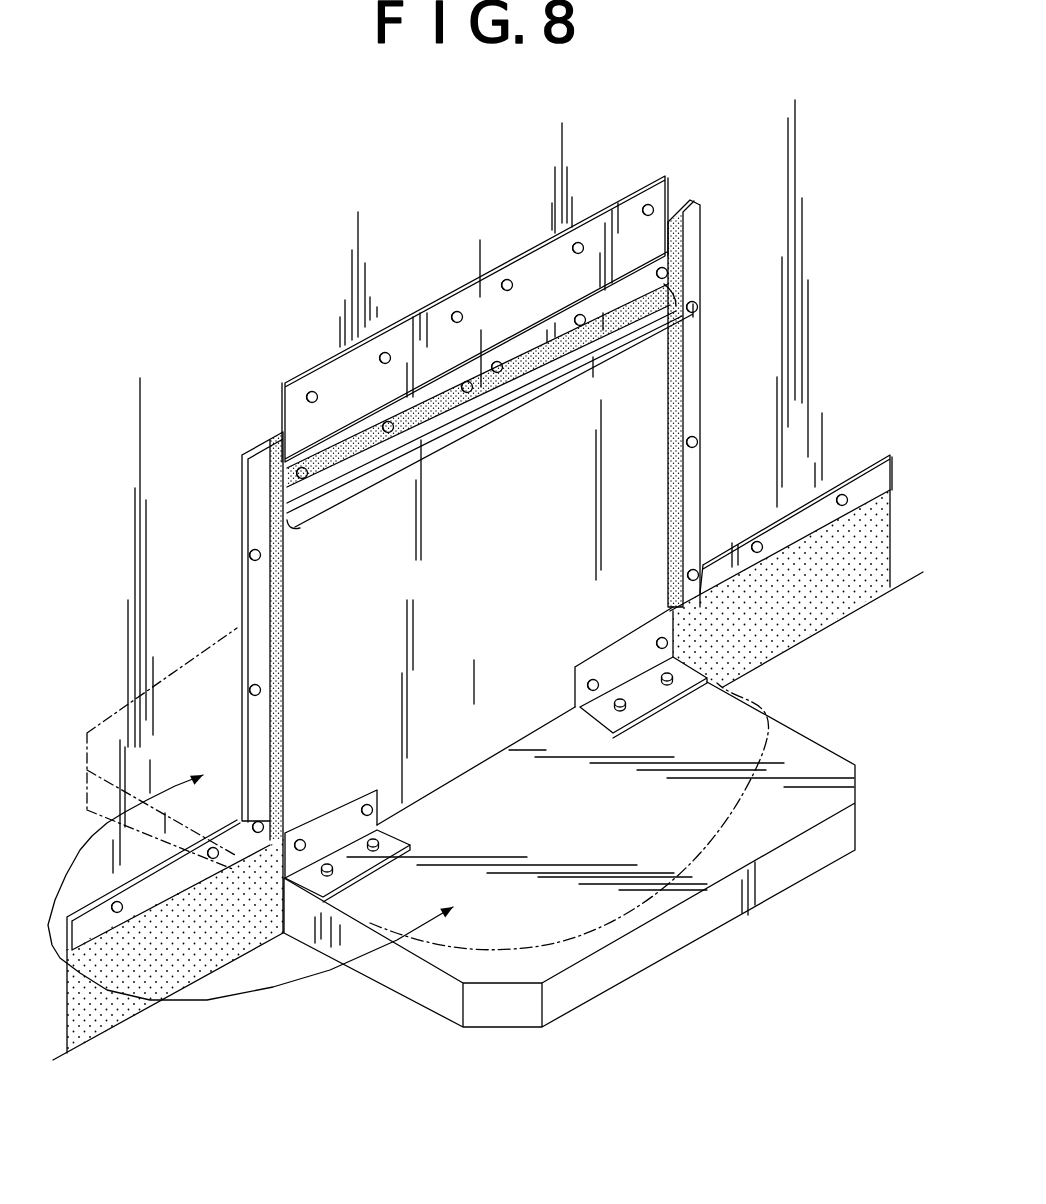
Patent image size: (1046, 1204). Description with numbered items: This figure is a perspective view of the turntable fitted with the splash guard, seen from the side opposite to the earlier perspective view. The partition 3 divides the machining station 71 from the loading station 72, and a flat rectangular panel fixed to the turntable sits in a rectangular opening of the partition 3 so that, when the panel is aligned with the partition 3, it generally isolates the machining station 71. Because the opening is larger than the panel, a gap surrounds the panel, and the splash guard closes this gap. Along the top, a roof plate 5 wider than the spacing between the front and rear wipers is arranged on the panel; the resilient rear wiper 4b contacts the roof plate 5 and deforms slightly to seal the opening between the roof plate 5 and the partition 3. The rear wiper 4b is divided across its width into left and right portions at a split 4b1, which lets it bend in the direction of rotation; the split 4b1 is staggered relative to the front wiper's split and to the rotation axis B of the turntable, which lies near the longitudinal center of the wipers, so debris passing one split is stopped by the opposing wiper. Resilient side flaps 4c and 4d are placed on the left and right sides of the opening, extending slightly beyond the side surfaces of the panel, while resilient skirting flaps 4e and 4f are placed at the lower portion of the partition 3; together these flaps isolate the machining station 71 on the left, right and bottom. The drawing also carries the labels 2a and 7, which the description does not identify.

The rotating axis B is at (568, 523).
The floor slab 2a is at (687, 693).
The partition 3 is at (185, 627).
The rear wiper 4b is at (516, 376).
The split 4b1 is at (482, 390).
The resilient side flap 4c is at (283, 706).
The resilient side flap 4d is at (673, 503).
The resilient skirting flap 4e is at (230, 910).
The resilient skirting flap 4f is at (767, 612).
The roof plate 5 is at (657, 323).
The sealing strip 7 is at (357, 452).
The machining station 71 is at (910, 730).
The loading station 72 is at (99, 686).